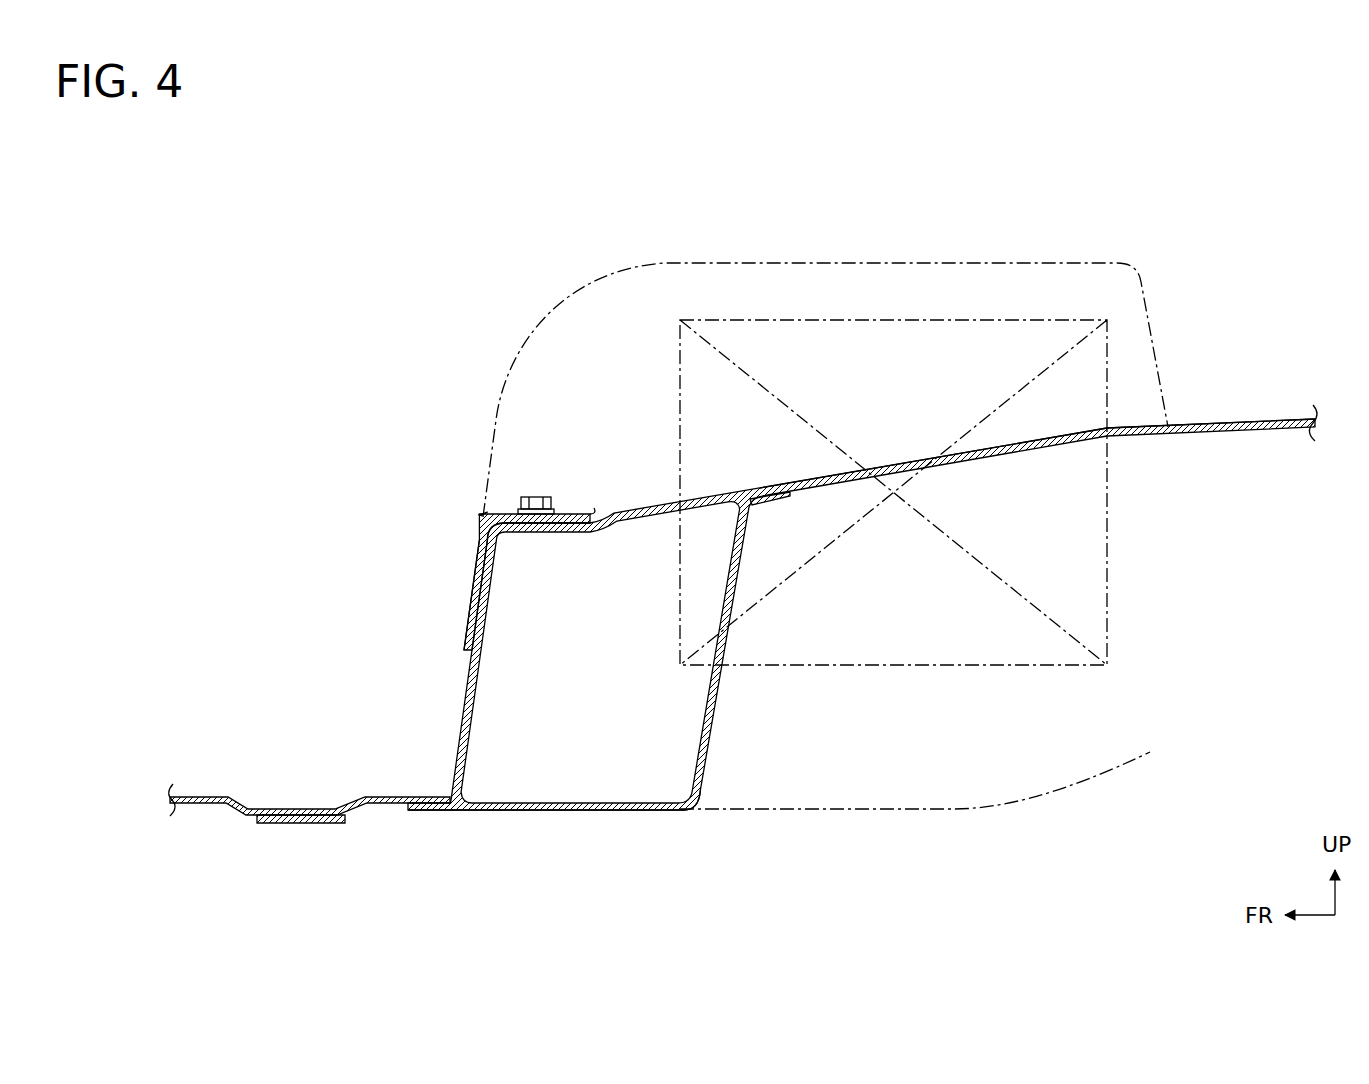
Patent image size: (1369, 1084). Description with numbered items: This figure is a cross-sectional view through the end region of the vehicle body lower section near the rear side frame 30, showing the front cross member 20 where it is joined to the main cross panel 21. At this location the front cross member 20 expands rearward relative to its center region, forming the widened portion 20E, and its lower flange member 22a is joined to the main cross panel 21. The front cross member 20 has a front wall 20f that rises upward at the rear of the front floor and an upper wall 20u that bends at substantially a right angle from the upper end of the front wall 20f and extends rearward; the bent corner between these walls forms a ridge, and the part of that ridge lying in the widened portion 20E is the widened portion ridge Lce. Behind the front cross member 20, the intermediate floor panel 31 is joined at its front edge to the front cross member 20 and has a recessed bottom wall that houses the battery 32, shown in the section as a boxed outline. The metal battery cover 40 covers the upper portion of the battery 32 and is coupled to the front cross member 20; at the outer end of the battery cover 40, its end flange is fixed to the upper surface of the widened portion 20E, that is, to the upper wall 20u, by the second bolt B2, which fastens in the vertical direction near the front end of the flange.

The front cross member 20 is at (708, 762).
The widened portion 20E is at (605, 812).
The front wall 20f is at (470, 622).
The upper wall 20u is at (573, 514).
The main cross panel 21 is at (463, 692).
The member 22a is at (516, 812).
The rear side frame 30 is at (1130, 419).
The intermediate floor panel 31 is at (1064, 792).
The battery 32 is at (845, 316).
The battery cover 40 is at (976, 258).
The second bolt B2 is at (535, 497).
The widened portion ridge Lce is at (486, 516).